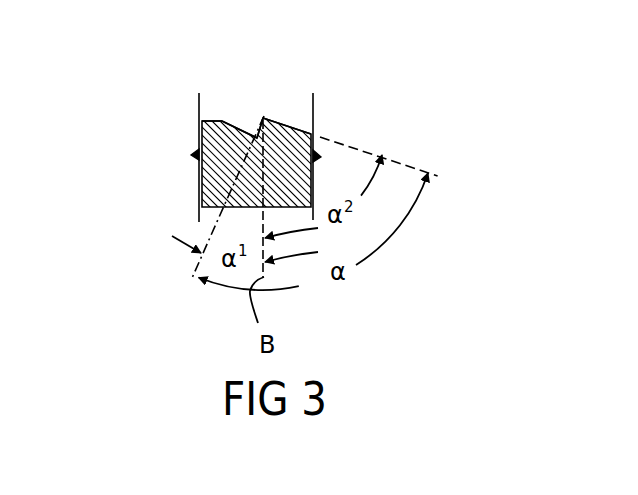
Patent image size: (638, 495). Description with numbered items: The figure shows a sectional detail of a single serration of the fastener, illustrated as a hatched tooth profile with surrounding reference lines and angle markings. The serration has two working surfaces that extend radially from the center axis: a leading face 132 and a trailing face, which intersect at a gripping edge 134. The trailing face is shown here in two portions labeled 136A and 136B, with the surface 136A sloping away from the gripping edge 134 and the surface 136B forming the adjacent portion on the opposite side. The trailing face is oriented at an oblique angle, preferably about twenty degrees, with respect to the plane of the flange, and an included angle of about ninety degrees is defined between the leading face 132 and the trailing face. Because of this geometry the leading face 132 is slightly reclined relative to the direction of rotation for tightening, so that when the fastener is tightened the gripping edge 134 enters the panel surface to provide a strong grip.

The leading face 132 is at (252, 134).
The gripping edge 134 is at (263, 118).
The trailing flank surface 136A is at (288, 126).
The top land surface 136B is at (227, 123).